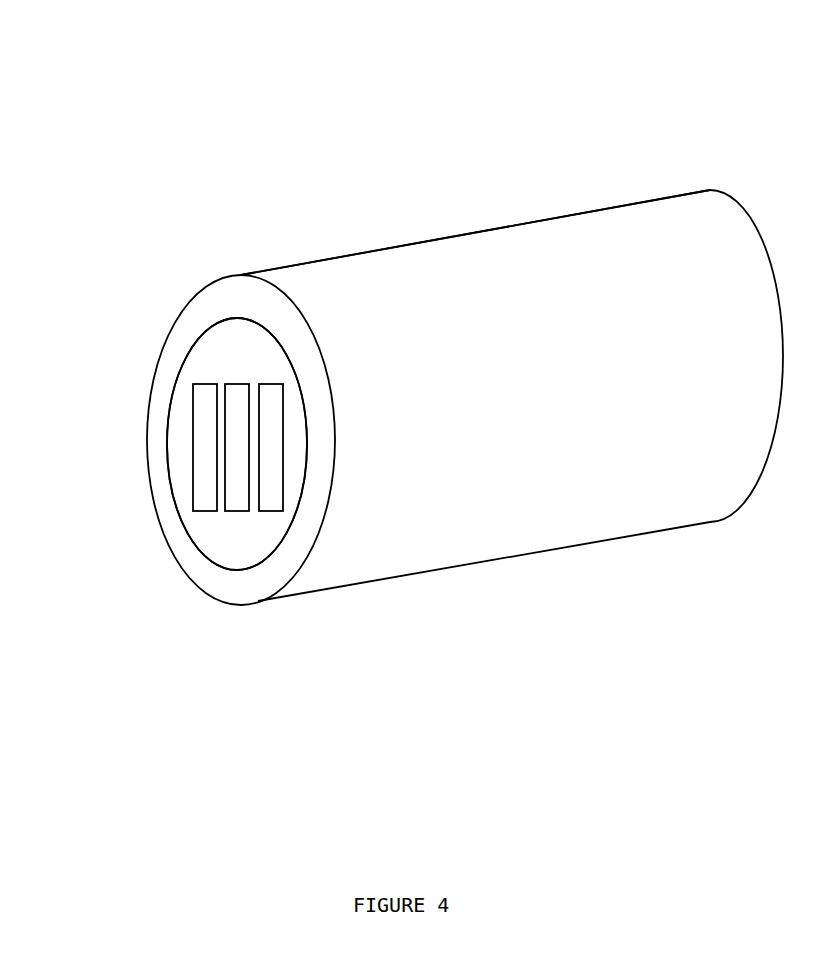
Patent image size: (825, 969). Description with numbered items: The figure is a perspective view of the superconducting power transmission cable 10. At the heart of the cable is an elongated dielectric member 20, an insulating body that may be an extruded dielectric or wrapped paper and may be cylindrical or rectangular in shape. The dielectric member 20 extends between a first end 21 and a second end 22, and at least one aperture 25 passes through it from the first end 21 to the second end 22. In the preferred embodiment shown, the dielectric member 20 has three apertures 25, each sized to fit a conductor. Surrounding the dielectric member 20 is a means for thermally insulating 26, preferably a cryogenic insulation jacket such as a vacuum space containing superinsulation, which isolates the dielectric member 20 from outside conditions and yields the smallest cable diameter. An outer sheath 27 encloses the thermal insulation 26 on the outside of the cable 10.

The superconducting power transmission cable 10 is at (386, 206).
The elongated dielectric member 20 is at (217, 358).
The first end 21 is at (252, 607).
The second end 22 is at (723, 530).
The aperture 25 is at (270, 490).
The means for thermally insulating 26 is at (262, 305).
The outer sheath 27 is at (545, 219).